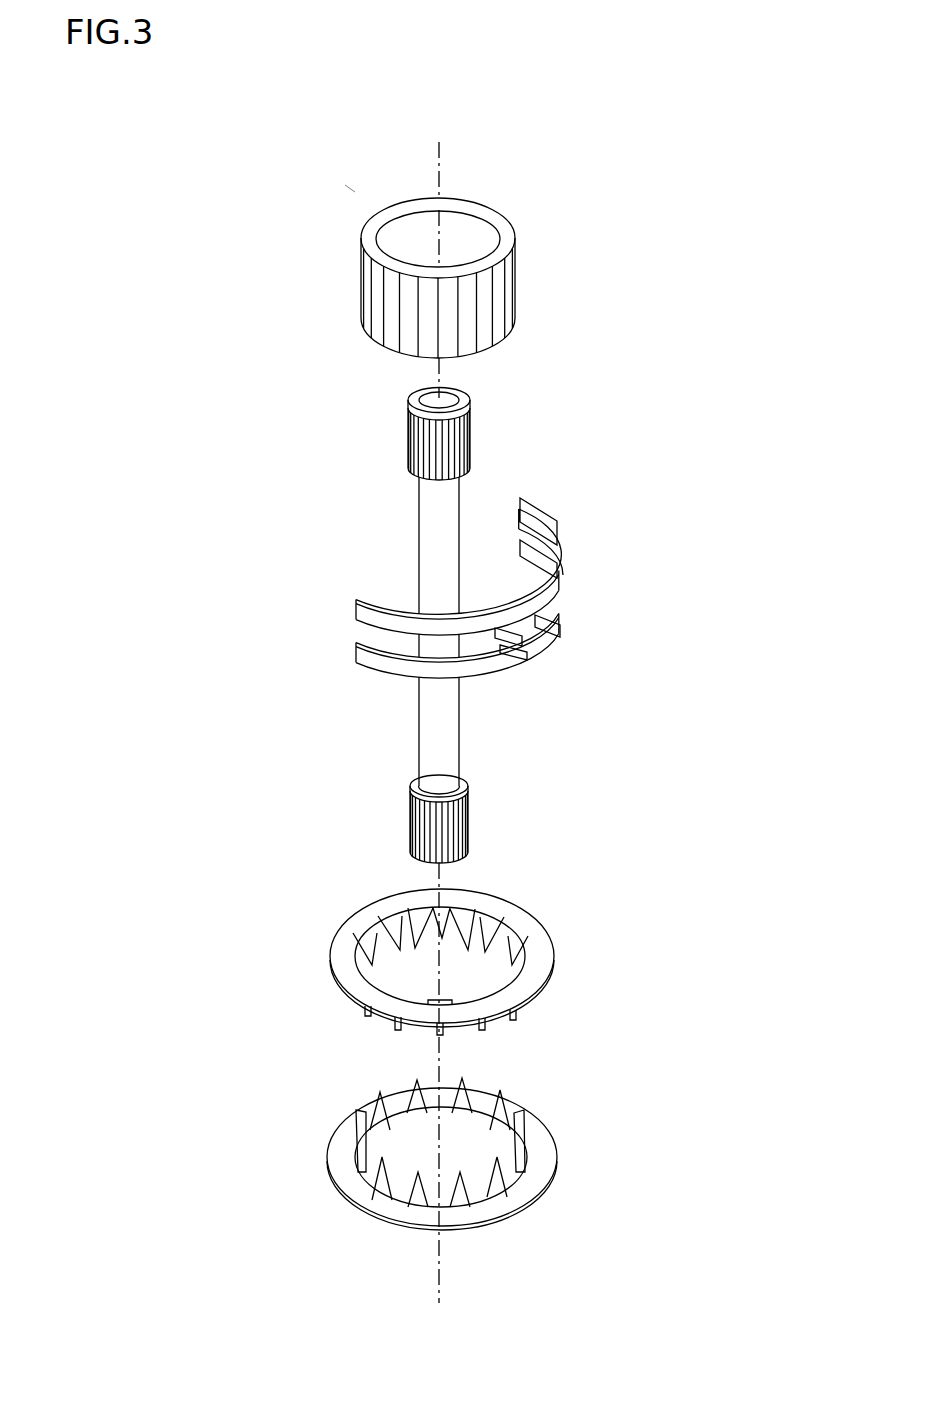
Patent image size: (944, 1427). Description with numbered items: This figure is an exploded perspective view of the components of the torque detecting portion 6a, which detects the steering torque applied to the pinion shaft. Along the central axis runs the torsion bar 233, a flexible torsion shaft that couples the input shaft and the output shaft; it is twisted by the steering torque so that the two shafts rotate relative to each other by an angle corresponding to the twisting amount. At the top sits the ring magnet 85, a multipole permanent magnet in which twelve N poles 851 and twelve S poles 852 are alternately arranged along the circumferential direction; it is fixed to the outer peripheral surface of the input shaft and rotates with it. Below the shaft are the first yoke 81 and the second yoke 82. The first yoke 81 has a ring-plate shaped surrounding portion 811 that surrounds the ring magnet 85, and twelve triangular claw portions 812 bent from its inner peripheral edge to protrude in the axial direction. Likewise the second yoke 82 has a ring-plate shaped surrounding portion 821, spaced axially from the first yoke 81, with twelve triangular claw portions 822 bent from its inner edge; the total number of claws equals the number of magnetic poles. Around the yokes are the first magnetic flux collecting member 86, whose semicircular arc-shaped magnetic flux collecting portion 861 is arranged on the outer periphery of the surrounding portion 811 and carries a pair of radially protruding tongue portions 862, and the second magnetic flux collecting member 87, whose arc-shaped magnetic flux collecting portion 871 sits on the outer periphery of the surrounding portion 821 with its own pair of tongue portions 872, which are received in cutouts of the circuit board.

The torque detecting portion 6a is at (352, 190).
The ring magnet 85 is at (495, 212).
The N poles 851 is at (427, 338).
The S poles 852 is at (487, 337).
The torsion bar 233 is at (462, 747).
The first magnetic flux collecting member 86 is at (352, 593).
The magnetic flux collecting portion 861 is at (538, 510).
The tongue portions 862 is at (512, 630).
The second magnetic flux collecting member 87 is at (352, 637).
The magnetic flux collecting portion 871 is at (370, 667).
The tongue portions 872 is at (527, 652).
The first yoke 81 is at (338, 908).
The surrounding portion 811 is at (542, 942).
The claw portions 812 is at (506, 920).
The second yoke 82 is at (338, 1103).
The surrounding portion 821 is at (545, 1157).
The claw portions 822 is at (507, 1105).